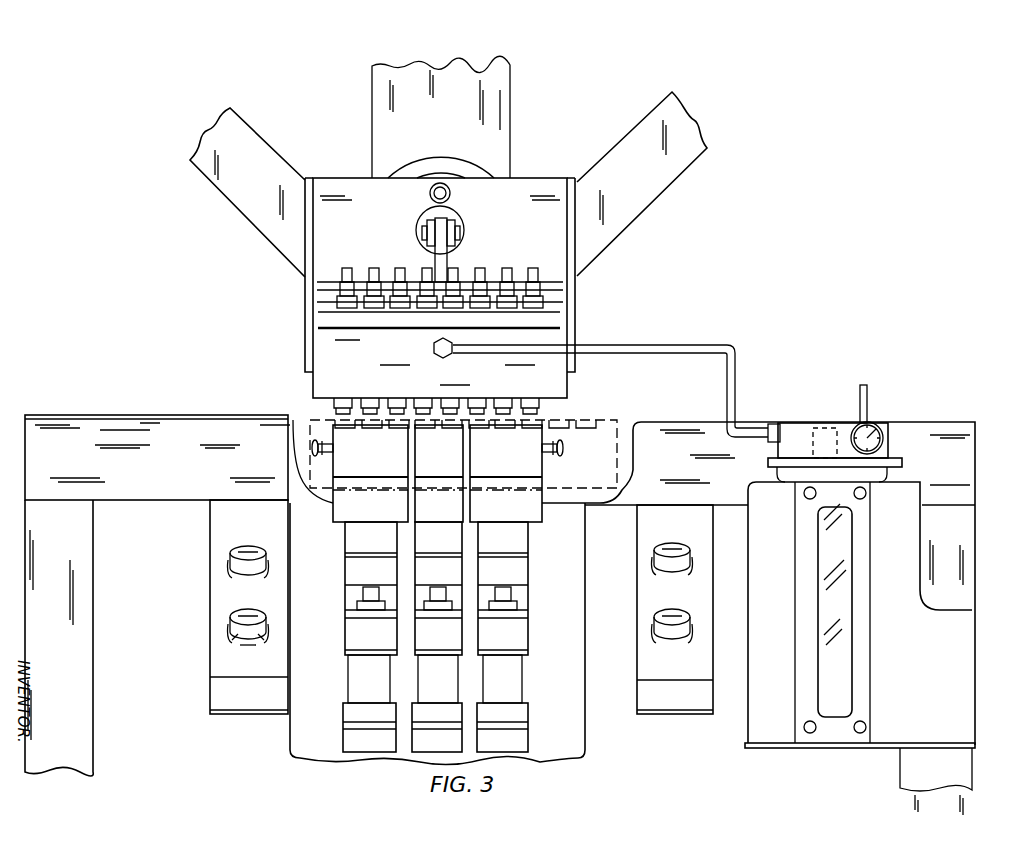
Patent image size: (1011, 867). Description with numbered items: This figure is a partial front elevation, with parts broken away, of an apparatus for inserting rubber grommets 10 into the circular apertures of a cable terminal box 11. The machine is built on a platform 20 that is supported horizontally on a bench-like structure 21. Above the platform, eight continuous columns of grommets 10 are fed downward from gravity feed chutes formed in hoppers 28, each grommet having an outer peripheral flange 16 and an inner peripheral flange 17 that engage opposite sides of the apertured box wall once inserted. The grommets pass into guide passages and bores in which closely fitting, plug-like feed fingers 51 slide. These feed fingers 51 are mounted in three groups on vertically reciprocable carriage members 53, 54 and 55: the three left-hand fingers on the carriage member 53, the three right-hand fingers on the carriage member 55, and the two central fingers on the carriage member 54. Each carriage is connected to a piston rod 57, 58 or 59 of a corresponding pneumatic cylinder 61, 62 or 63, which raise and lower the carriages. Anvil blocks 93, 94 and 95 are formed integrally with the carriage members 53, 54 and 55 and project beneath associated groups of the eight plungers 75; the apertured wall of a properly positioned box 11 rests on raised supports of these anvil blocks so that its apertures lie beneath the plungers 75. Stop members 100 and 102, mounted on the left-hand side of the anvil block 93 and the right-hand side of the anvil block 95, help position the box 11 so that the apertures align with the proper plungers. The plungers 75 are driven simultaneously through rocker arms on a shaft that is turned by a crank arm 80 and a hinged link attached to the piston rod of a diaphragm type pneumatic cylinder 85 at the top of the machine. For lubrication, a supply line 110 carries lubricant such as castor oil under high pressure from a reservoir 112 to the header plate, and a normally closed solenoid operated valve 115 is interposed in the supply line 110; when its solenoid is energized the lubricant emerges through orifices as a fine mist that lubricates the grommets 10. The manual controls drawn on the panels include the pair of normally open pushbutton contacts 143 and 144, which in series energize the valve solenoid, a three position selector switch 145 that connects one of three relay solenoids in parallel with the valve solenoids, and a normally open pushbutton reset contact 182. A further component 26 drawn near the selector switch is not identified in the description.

The rubber grommets 10 is at (233, 641).
The cable terminal box 11 is at (597, 421).
The outer peripheral flange 16 is at (265, 640).
The inner peripheral flange 17 is at (373, 271).
The platform 20 is at (165, 417).
The bench-like structure 21 is at (28, 444).
The switch 26 is at (248, 648).
The hoppers 28 is at (282, 160).
The feed fingers 51 is at (333, 410).
The carriage member 53 is at (343, 531).
The carriage member 54 is at (427, 531).
The carriage member 55 is at (488, 531).
The piston rod 57 is at (360, 597).
The piston rod 58 is at (448, 604).
The piston rod 59 is at (510, 595).
The pneumatic cylinder 61 is at (352, 676).
The pneumatic cylinder 62 is at (425, 692).
The pneumatic cylinder 63 is at (520, 692).
The plungers 75 is at (402, 311).
The crank arm 80 is at (446, 264).
The pneumatic cylinder 85 is at (473, 162).
The anvil block 93 is at (337, 467).
The anvil block 94 is at (423, 463).
The anvil block 95 is at (477, 463).
The stop member 100 is at (312, 448).
The stop member 102 is at (564, 448).
The supply line 110 is at (670, 347).
The reservoir 112 is at (918, 522).
The solenoid operated valve 115 is at (828, 428).
The pushbutton contact 143 is at (235, 546).
The pushbutton contact 144 is at (690, 548).
The selector switch 145 is at (226, 619).
The pushbutton reset contact 182 is at (690, 620).